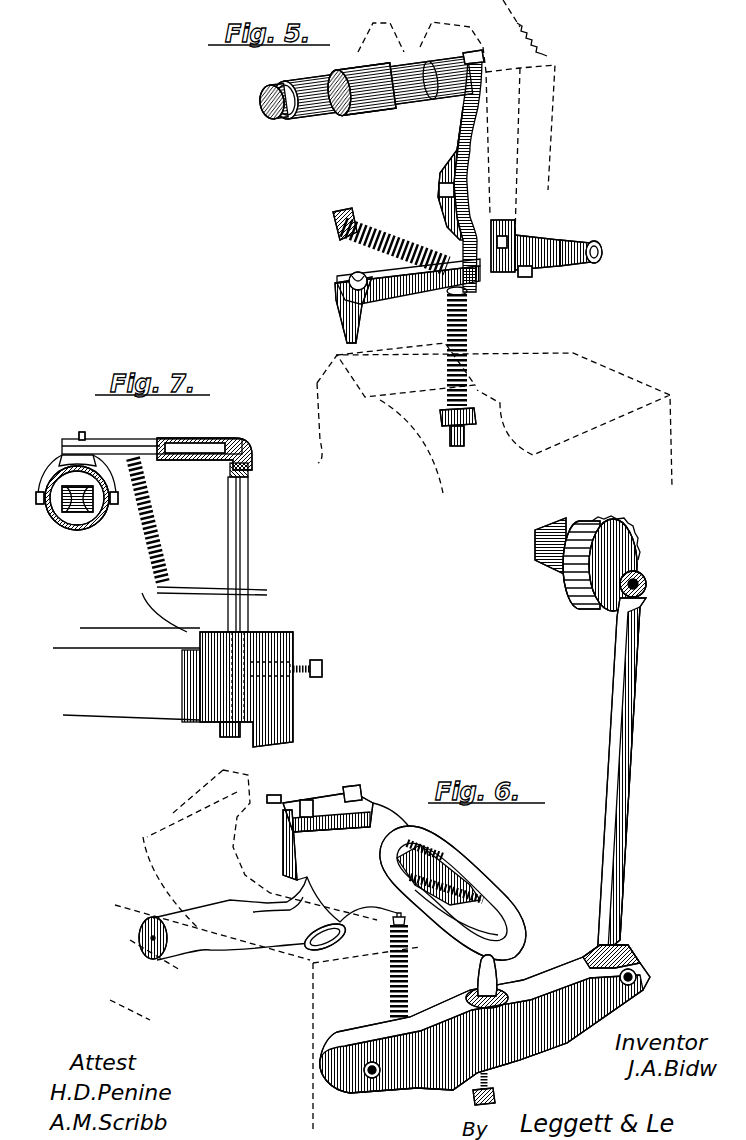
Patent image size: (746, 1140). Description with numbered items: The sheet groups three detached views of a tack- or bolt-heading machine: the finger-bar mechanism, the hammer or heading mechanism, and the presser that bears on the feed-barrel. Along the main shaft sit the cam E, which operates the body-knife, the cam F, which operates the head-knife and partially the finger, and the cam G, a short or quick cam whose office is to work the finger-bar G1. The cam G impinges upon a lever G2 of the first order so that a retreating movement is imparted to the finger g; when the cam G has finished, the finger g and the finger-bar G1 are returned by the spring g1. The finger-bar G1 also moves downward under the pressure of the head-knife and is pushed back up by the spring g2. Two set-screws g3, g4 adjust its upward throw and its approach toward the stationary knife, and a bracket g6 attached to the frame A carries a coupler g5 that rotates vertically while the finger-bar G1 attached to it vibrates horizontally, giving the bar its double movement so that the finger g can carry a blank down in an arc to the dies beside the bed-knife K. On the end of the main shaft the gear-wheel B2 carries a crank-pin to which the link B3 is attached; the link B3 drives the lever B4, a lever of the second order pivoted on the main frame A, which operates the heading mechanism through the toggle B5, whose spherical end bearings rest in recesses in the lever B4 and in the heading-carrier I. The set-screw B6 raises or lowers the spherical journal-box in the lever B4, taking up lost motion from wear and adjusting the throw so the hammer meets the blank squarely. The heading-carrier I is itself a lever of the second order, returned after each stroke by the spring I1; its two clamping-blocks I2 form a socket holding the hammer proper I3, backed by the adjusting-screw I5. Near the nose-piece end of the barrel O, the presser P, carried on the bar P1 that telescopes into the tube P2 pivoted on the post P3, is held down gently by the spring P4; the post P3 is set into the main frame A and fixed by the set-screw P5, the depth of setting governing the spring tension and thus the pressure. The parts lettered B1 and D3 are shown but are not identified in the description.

In FIG. 5, the cam E is at (365, 93).
In FIG. 5, the cam F is at (360, 91).
In FIG. 5, the cam G is at (469, 162).
In FIG. 5, the finger-bar G1 is at (408, 286).
In FIG. 5, the lever G2 is at (466, 173).
In FIG. 5, the finger g is at (349, 307).
In FIG. 5, the spring g1 is at (390, 237).
In FIG. 5, the spring g2 is at (444, 340).
In FIG. 5, the set-screw g3 is at (504, 237).
In FIG. 5, the set-screw g4 is at (530, 274).
In FIG. 5, the coupler g5 is at (574, 243).
In FIG. 5, the bracket g6 is at (540, 238).
In FIG. 5, the gear-wheel B2 is at (459, 117).
In FIG. 5, the bed-knife K is at (406, 370).
In FIG. 5, the main frame A is at (494, 423).
In FIG. 7, the main frame A is at (173, 687).
In FIG. 6, the main frame A is at (265, 951).
In FIG. 7, the presser P is at (77, 492).
In FIG. 7, the bar P1 is at (152, 436).
In FIG. 7, the tube P2 is at (204, 444).
In FIG. 7, the post P3 is at (249, 592).
In FIG. 7, the spring P4 is at (200, 545).
In FIG. 7, the set-screw P5 is at (295, 668).
In FIG. 7, the barrel O is at (77, 517).
In FIG. 6, the gear B1 is at (587, 563).
In FIG. 6, the link B3 is at (624, 765).
In FIG. 6, the lever B4 is at (485, 1019).
In FIG. 6, the toggle B5 is at (496, 972).
In FIG. 6, the set-screw B6 is at (495, 1097).
In FIG. 6, the hammer or heading-carrier I is at (404, 881).
In FIG. 6, the spring I1 is at (382, 966).
In FIG. 6, the clamping-blocks I2 is at (306, 796).
In FIG. 6, the hammer proper I3 is at (272, 789).
In FIG. 6, the adjusting-screw I5 is at (447, 855).
In FIG. 6, the bracket plate D3 is at (366, 797).